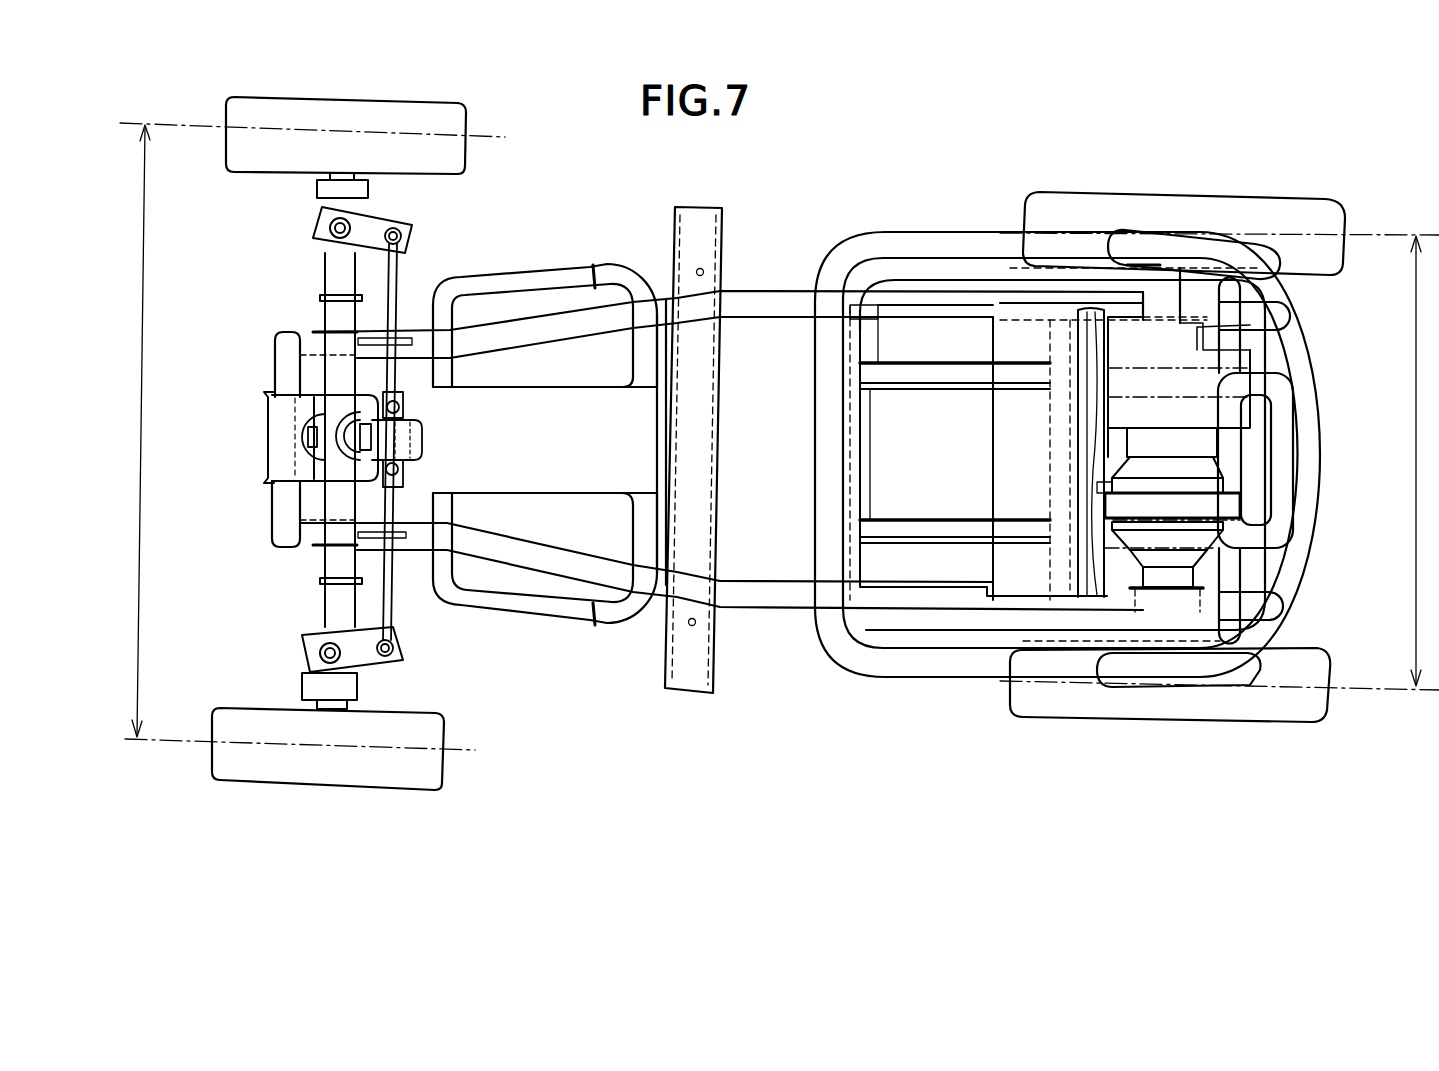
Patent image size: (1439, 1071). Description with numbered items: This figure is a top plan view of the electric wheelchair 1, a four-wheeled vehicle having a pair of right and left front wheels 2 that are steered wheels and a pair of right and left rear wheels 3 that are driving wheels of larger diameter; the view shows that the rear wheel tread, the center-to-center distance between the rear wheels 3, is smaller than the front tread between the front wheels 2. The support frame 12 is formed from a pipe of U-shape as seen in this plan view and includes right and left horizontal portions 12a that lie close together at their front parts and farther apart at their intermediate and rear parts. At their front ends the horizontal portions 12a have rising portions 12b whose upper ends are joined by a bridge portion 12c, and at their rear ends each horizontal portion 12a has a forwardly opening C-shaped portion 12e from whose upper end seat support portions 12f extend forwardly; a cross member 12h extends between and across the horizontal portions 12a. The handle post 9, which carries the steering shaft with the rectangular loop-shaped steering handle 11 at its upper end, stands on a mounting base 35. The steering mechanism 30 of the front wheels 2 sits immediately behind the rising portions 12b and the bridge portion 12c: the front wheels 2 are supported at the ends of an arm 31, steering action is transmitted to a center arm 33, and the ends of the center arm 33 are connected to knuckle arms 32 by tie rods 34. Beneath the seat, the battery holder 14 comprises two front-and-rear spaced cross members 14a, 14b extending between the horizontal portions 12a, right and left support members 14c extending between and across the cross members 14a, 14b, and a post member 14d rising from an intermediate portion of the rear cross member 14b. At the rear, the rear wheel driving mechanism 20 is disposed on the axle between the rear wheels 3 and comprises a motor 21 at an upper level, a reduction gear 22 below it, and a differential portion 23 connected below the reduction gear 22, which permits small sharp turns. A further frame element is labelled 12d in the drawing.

The electric wheelchair 1 is at (836, 159).
The front wheels 2 is at (415, 108).
The rear wheels 3 is at (1265, 210).
The handle post 9 is at (420, 452).
The steering handle 11 is at (558, 275).
The support frame 12 is at (555, 562).
The horizontal portions 12a is at (762, 300).
The rising portions 12b is at (272, 336).
The bridge portion 12c is at (285, 505).
The rear frame loop 12d is at (973, 308).
The C-shaped portion 12e is at (1277, 316).
The seat support portions 12f is at (1063, 280).
The cross member 12h is at (705, 425).
The battery holder 14 is at (957, 479).
The cross member 14a is at (867, 462).
The cross member 14b is at (1015, 410).
The support members 14c is at (940, 375).
The post member 14d is at (1077, 458).
The rear wheel driving mechanism 20 is at (1241, 464).
The motor 21 is at (1212, 413).
The reduction gear 22 is at (1197, 446).
The differential portion 23 is at (1197, 504).
The steering mechanism 30 is at (416, 256).
The arm 31 is at (330, 617).
The knuckle arms 32 is at (372, 242).
The center arm 33 is at (420, 440).
The tie rods 34 is at (400, 282).
The mounting base 35 is at (300, 408).